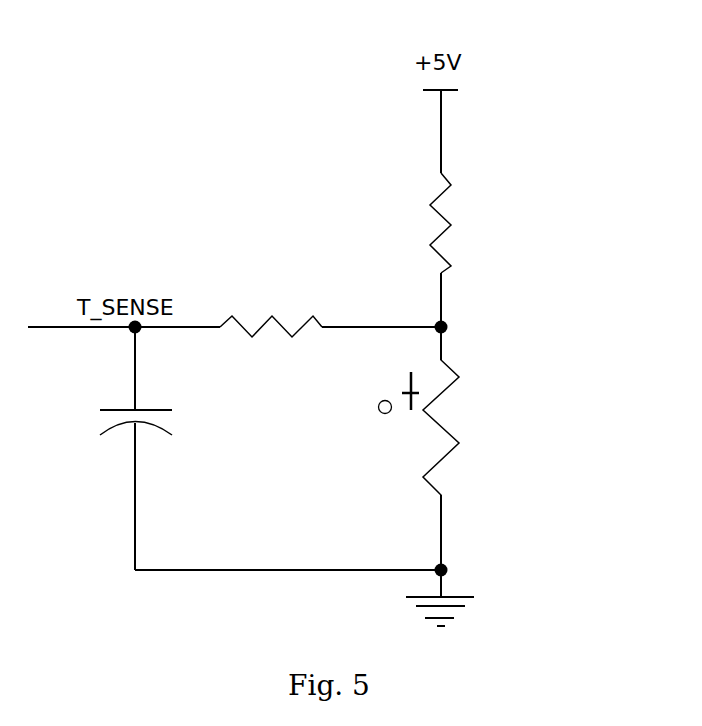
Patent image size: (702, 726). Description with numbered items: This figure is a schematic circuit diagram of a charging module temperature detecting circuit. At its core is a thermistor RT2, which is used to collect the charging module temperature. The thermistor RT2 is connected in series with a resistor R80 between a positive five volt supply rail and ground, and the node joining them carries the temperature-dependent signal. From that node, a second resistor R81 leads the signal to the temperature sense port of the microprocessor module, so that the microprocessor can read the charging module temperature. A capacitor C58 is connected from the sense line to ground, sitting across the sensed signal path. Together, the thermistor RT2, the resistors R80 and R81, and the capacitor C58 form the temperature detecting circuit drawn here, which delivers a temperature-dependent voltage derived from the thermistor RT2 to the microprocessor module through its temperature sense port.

The resistor R80 is at (473, 222).
The resistor R81 is at (275, 297).
The thermistor RT2 is at (457, 448).
The capacitor C58 is at (161, 448).